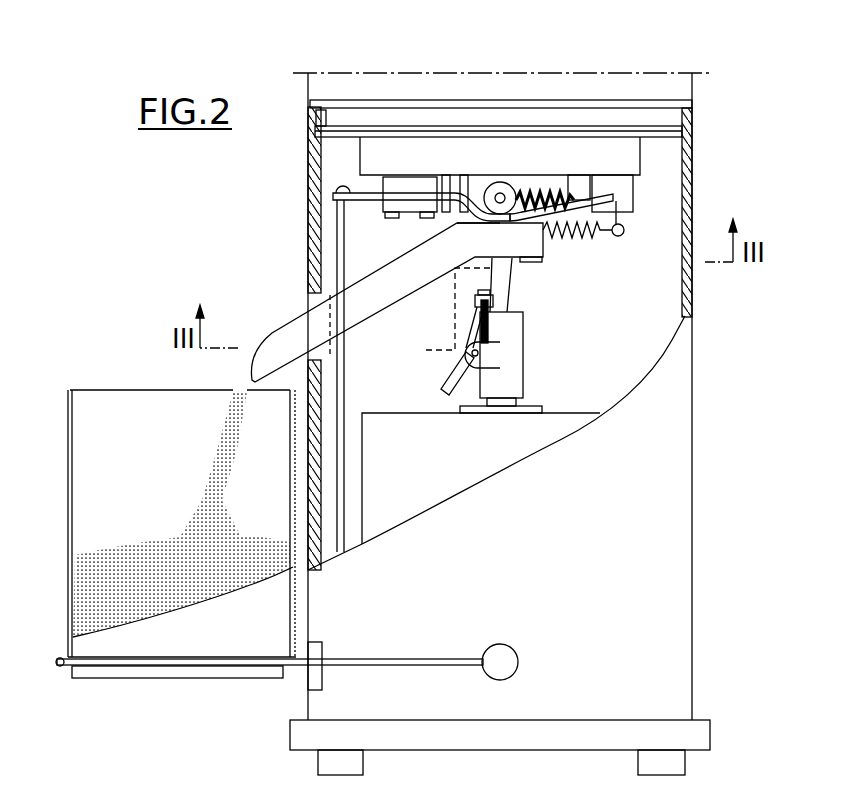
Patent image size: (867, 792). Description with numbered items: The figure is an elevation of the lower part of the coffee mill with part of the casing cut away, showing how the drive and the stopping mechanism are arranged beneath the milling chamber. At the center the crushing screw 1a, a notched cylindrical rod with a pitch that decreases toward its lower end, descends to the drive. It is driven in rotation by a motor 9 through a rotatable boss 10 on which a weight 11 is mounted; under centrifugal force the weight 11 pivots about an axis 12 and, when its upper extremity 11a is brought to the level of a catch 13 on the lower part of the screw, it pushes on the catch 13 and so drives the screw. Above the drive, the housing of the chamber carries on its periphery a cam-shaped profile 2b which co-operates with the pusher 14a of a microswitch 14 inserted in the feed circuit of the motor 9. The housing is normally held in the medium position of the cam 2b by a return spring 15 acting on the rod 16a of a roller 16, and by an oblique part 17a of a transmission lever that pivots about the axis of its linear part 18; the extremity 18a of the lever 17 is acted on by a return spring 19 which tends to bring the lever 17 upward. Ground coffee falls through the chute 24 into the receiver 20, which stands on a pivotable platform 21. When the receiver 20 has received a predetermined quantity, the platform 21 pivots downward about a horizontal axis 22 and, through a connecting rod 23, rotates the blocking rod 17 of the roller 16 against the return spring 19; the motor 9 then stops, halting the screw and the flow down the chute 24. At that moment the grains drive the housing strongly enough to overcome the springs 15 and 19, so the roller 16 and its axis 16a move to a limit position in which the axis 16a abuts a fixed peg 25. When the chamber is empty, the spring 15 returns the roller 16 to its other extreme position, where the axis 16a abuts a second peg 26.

The crushing screw 1a is at (507, 282).
The cam profile 2b is at (443, 190).
The motor 9 is at (572, 434).
The rotatable boss 10 is at (509, 388).
The weight 11 is at (445, 387).
The upper extremity of the weight 11a is at (478, 298).
The axis 12 is at (472, 354).
The catch 13 is at (470, 316).
The microswitch 14 is at (395, 182).
The pusher 14a is at (418, 182).
The return spring 15 is at (550, 186).
The roller 16 is at (508, 184).
The rod of the roller 16a is at (500, 194).
The blocking rod 17 is at (360, 202).
The oblique part of the transmission lever 17a is at (456, 224).
The linear part of the transmission lever 18 is at (613, 202).
The extremity of the lever 18a is at (624, 231).
The return spring 19 is at (575, 240).
The receiver 20 is at (88, 430).
The pivotable platform 21 is at (60, 657).
The horizontal axis 22 is at (504, 655).
The connecting rod 23 is at (345, 238).
The chute 24 is at (290, 333).
The fixed peg 25 is at (463, 188).
The second peg 26 is at (556, 190).